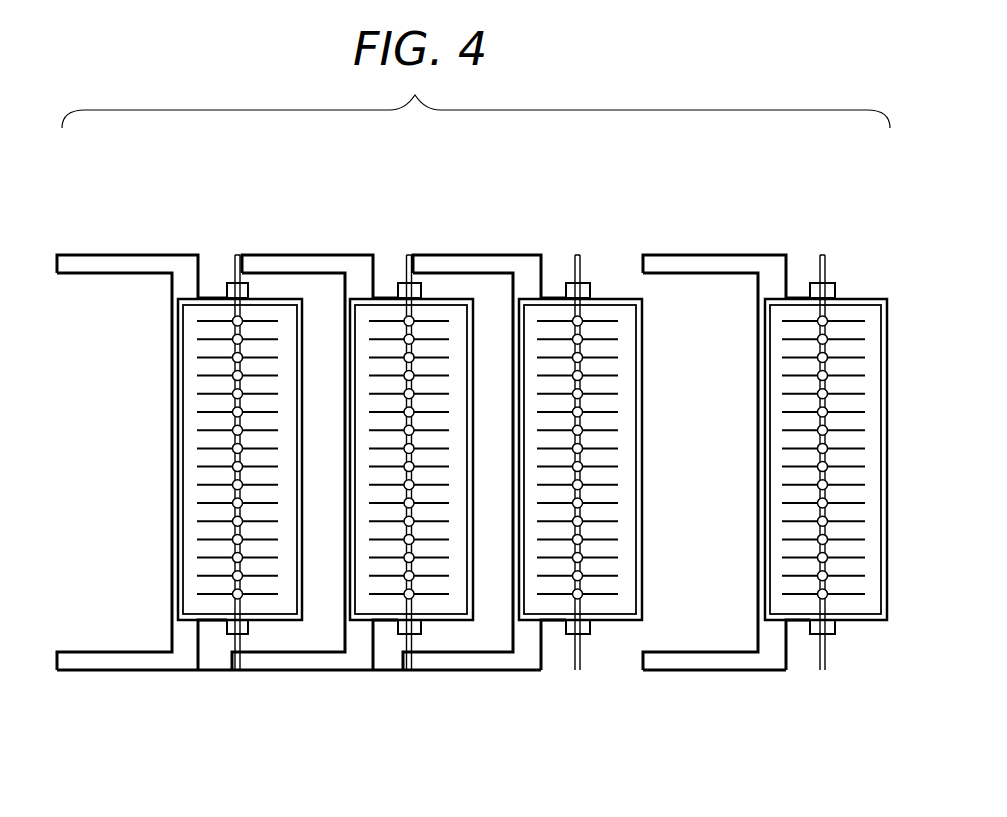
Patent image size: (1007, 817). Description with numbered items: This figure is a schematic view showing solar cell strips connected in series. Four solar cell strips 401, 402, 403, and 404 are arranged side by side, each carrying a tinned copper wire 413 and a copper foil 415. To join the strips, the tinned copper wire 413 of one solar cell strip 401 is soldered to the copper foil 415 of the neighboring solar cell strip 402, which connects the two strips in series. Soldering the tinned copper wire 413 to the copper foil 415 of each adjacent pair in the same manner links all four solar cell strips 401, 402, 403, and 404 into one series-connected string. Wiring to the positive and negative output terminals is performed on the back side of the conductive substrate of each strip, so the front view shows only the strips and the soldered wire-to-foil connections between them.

The solar cell strip 401 is at (208, 622).
The solar cell strip 402 is at (380, 622).
The solar cell strip 403 is at (580, 451).
The solar cell strip 404 is at (795, 622).
The tinned copper wire 413 is at (575, 256).
The copper foil 415 is at (692, 256).